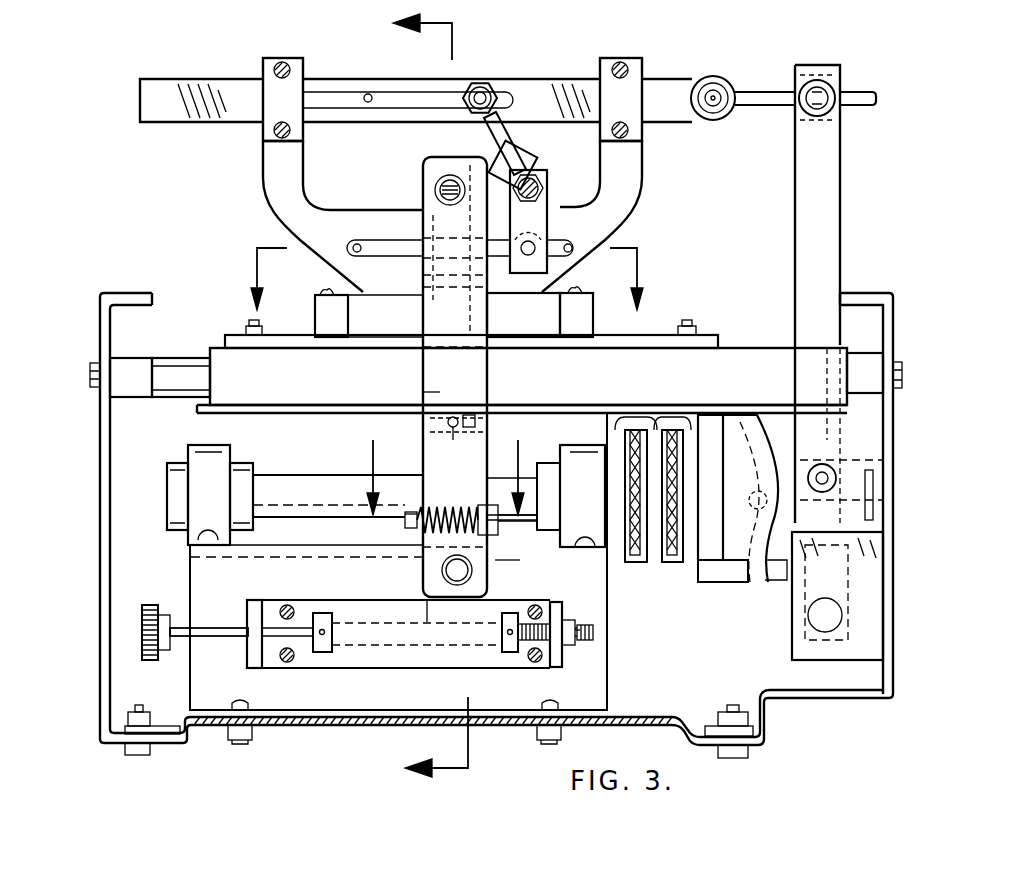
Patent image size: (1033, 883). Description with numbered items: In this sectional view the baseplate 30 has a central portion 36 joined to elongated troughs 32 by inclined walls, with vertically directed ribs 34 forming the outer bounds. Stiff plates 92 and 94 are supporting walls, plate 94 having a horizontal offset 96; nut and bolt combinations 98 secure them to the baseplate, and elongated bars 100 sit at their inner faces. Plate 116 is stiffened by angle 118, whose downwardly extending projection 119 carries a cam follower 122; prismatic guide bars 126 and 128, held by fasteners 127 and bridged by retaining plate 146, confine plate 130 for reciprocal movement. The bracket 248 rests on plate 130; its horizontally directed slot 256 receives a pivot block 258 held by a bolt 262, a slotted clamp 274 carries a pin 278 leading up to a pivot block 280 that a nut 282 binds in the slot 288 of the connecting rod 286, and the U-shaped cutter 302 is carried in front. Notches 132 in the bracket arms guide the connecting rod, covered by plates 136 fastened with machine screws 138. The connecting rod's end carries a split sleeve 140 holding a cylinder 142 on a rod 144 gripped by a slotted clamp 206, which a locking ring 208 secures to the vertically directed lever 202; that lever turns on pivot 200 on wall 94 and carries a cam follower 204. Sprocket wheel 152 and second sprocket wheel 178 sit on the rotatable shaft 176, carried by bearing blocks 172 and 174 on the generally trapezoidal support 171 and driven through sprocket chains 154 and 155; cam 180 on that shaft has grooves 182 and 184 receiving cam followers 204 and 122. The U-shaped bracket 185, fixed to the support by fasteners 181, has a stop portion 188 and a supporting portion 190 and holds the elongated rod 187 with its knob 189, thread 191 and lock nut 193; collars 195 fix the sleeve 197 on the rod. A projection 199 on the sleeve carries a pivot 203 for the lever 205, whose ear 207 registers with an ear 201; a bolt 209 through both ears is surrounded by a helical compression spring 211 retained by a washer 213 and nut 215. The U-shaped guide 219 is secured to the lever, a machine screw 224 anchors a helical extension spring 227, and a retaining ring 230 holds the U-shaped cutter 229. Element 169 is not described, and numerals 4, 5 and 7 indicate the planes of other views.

The section line 4- 4 is at (445, 282).
The section line 5- 5 is at (445, 466).
The section line 7- 7 is at (423, 397).
The baseplate 30 is at (368, 727).
The elongated troughs 32 is at (170, 742).
The vertically directed ribs 34 is at (103, 735).
The central portion of baseplate 36 is at (488, 727).
The stiff plate 92 is at (102, 440).
The stiff plate 94 is at (893, 405).
The horizontal offset 96 is at (830, 700).
The nut and bolt combinations 98 is at (133, 757).
The elongated bars 100 is at (130, 360).
The plate 116 is at (705, 335).
The angle 118 is at (282, 415).
The downwardly extending projection 119 is at (676, 563).
The cam follower 122 is at (790, 470).
The prismatic guide bar 126 is at (580, 338).
The fasteners 127 is at (325, 287).
The prismatic guide bar 128 is at (327, 332).
The plate 130 is at (390, 332).
The notches 132 is at (303, 62).
The plates 136 is at (303, 140).
The machine screws 138 is at (297, 77).
The split sleeve 140 is at (718, 78).
The cylinder 142 is at (713, 105).
The rod 144 is at (748, 105).
The retaining plate 146 is at (312, 300).
The sprocket wheel 152 is at (635, 563).
The sprocket chain 154 is at (635, 417).
The sprocket chain 155 is at (675, 417).
The mounting bolt 169 is at (240, 705).
The generally trapezoidal support 171 is at (190, 570).
The bearing block 172 is at (598, 452).
The bearing block 174 is at (215, 462).
The rotatable shaft 176 is at (290, 518).
The second sprocket wheel 178 is at (577, 630).
The cam 180 is at (757, 415).
The fasteners 181 is at (292, 610).
The groove 182 is at (880, 500).
The groove 184 is at (768, 585).
The U-shaped bracket 185 is at (352, 668).
The elongated rod 187 is at (222, 636).
The stop portion 188 is at (430, 390).
The knob 189 is at (150, 660).
The supporting portion 190 is at (478, 422).
The thread 191 is at (585, 640).
The nut 193 is at (578, 645).
The collars 195 is at (322, 652).
The sleeve 197 is at (432, 645).
The projection 199 is at (432, 608).
The pivot 200 is at (812, 625).
The ear 201 is at (498, 560).
The vertically directed lever 202 is at (840, 205).
The pivot 203 is at (443, 572).
The cam follower 204 is at (836, 478).
The lever 205 is at (430, 318).
The slotted clamp 206 is at (823, 112).
The ear 207 is at (498, 528).
The locking ring 208 is at (830, 85).
The bolt 209 is at (545, 510).
The helical compression spring 211 is at (445, 510).
The washer 213 is at (410, 525).
The nut 215 is at (405, 515).
The U-shaped guide 219 is at (410, 215).
The machine screw 224 is at (462, 415).
The helical extension spring 227 is at (480, 410).
The U-shaped cutter 229 is at (447, 180).
The retaining ring 230 is at (520, 180).
The bracket 248 is at (632, 185).
The horizontally directed slot 256 is at (357, 240).
The pivot block 258 is at (555, 225).
The bolt 262 is at (527, 255).
The slotted clamp 274 is at (528, 163).
The pin 278 is at (507, 140).
The pivot block 280 is at (480, 82).
The nut 282 is at (490, 88).
The connecting rod 286 is at (235, 82).
The slot 288 is at (368, 95).
The U-shaped cutter 302 is at (543, 185).